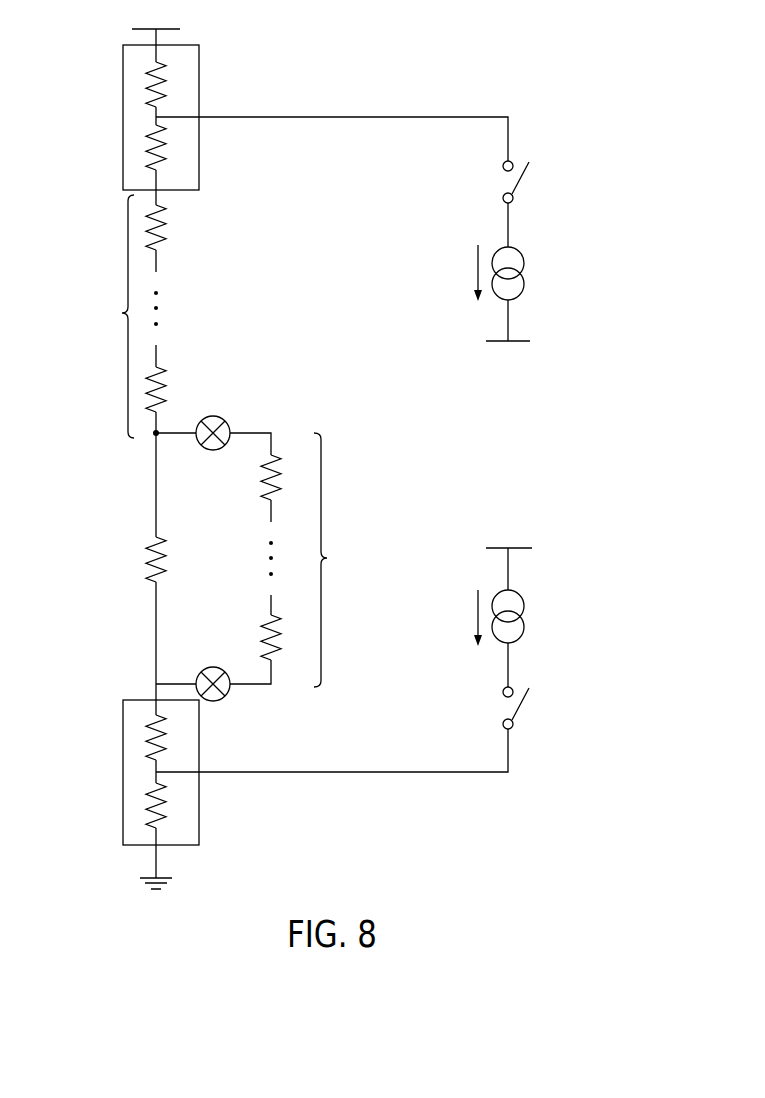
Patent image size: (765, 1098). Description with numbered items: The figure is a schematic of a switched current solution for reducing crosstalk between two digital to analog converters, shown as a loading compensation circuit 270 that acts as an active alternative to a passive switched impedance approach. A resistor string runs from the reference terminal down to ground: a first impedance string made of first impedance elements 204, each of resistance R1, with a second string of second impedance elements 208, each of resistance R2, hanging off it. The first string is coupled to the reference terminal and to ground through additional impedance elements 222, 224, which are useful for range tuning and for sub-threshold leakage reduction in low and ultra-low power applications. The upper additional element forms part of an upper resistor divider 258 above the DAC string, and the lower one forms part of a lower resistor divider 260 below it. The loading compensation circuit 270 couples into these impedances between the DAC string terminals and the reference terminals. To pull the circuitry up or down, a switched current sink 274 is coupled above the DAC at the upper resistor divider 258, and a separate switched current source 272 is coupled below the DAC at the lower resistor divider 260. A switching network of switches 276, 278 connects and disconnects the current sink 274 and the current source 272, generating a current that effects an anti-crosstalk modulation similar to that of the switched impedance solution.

The first impedance element 204 is at (166, 372).
The second impedance element 208 is at (265, 472).
The additional impedance element 222 is at (148, 78).
The additional impedance element 224 is at (148, 798).
The upper resistor divider 258 is at (123, 152).
The lower resistor divider 260 is at (123, 744).
The loading compensation circuit 270 is at (510, 53).
The current source 272 is at (526, 612).
The current sink 274 is at (526, 270).
The switch 276 is at (528, 178).
The switch 278 is at (528, 706).